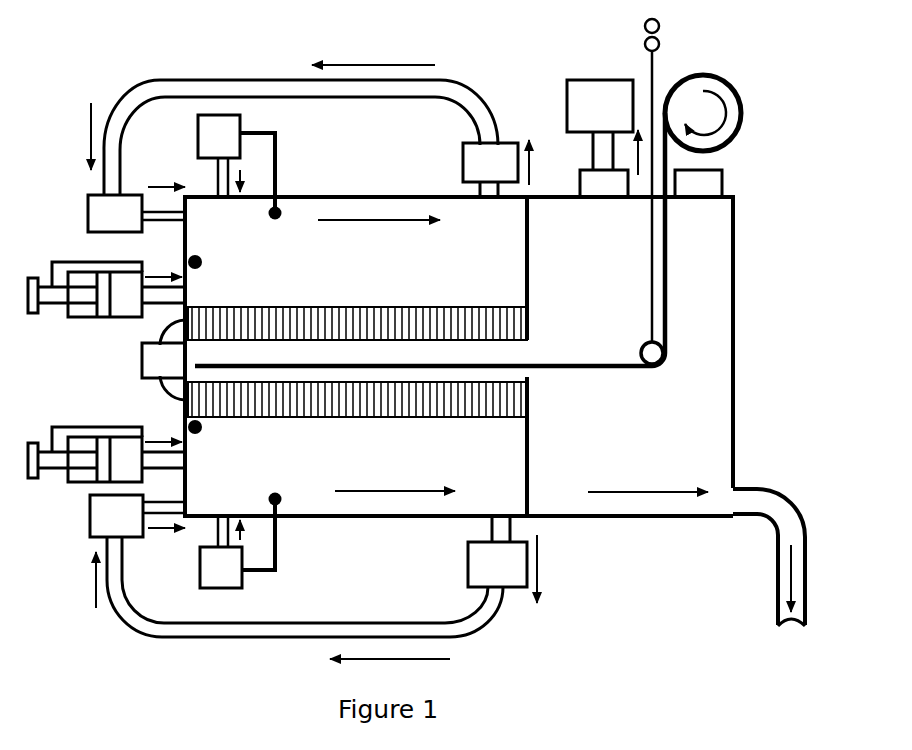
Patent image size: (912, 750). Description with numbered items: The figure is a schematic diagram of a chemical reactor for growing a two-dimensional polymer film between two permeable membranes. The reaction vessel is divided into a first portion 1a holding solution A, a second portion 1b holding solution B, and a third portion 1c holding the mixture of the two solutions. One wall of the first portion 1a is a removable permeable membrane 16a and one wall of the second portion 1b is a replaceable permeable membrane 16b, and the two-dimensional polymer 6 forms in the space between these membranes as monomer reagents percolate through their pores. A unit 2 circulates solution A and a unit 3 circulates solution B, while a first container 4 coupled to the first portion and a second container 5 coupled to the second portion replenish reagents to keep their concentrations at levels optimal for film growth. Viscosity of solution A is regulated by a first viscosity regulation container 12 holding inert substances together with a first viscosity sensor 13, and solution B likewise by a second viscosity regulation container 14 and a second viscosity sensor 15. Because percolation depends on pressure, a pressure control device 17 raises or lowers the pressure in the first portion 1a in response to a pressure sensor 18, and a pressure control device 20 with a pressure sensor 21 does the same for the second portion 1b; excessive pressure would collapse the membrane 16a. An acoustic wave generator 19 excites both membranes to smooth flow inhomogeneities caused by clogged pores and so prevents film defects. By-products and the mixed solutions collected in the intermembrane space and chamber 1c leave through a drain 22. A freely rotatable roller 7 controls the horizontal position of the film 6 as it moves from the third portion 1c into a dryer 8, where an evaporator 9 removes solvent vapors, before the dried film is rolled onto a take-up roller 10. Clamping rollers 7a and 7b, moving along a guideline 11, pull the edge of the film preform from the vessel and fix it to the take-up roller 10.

The first portion of reaction vessel 1a is at (345, 196).
The second portion of reaction vessel 1b is at (368, 503).
The third portion of reaction vessel 1c is at (697, 382).
The circulating unit for solution A 2 is at (86, 200).
The circulating unit for solution B 3 is at (90, 535).
The first container 4 is at (463, 165).
The second container 5 is at (508, 588).
The two-dimensional polymer film 6 is at (602, 362).
The freely rotatable roller 7 is at (640, 347).
The clamping roller 7a is at (645, 26).
The clamping roller 7b is at (660, 38).
The dryer 8 is at (578, 172).
The evaporator 9 is at (568, 97).
The take-up roller 10 is at (712, 115).
The guideline 11 is at (650, 322).
The first viscosity regulation container 12 is at (216, 115).
The first viscosity sensor 13 is at (275, 133).
The second viscosity regulation container 14 is at (210, 580).
The second viscosity sensor 15 is at (267, 573).
The first permeable membrane 16a is at (285, 328).
The second permeable membrane 16b is at (287, 403).
The pressure control device 17 is at (110, 316).
The pressure sensor 18 is at (80, 262).
The acoustic wave generator 19 is at (142, 368).
The pressure control device 20 is at (80, 487).
The pressure sensor 21 is at (80, 425).
The drain 22 is at (788, 548).